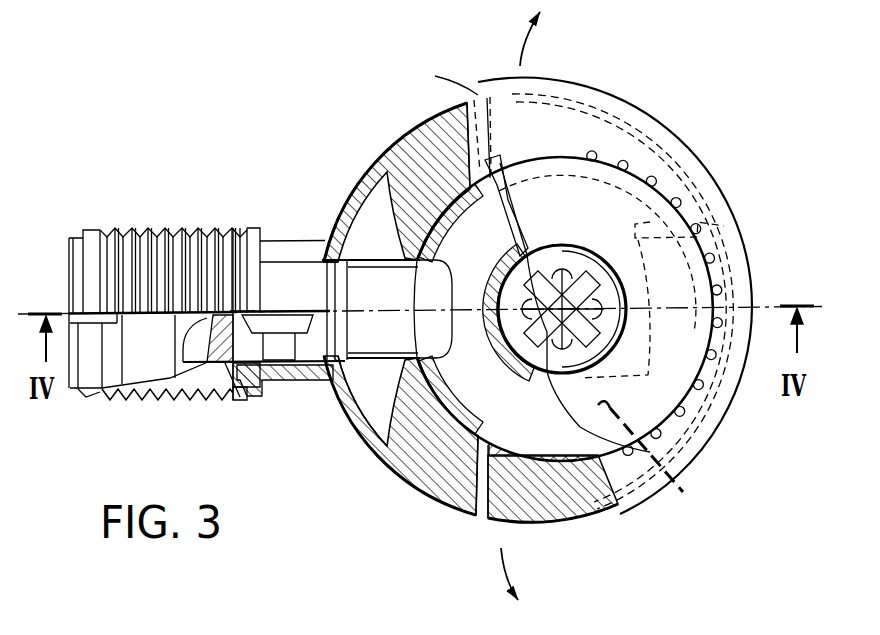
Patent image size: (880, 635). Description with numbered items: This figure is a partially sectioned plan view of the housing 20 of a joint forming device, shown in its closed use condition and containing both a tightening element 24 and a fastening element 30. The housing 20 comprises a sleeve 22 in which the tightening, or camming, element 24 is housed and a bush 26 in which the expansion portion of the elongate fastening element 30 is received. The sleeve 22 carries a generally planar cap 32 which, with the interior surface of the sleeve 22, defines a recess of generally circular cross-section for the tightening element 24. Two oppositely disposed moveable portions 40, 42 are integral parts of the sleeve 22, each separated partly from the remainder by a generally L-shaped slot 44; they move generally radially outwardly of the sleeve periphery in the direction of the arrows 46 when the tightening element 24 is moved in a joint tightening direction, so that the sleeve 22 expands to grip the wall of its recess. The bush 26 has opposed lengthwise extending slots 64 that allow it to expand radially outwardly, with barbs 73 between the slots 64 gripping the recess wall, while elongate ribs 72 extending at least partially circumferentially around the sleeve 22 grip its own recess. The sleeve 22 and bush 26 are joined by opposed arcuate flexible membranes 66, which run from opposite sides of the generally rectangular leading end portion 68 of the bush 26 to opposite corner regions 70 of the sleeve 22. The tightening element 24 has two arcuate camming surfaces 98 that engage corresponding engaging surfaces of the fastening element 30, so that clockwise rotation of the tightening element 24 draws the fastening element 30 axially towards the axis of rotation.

The housing 20 is at (287, 130).
The sleeve 22 is at (392, 130).
The tightening element 24 is at (485, 397).
The bush 26 is at (210, 228).
The fastening element 30 is at (368, 327).
The cap 32 is at (710, 183).
The moveable portion 40 is at (593, 135).
The moveable portion 42 is at (553, 513).
The L-shaped slot 44 is at (482, 507).
The arrows 46 is at (540, 314).
The lengthwise extending slots 64 is at (190, 378).
The flexible membranes 66 is at (338, 218).
The leading end portion 68 is at (283, 252).
The corner regions 70 is at (380, 455).
The elongate ribs 72 is at (607, 507).
The barbs 73 is at (143, 232).
The arcuate camming surfaces 98 is at (670, 480).